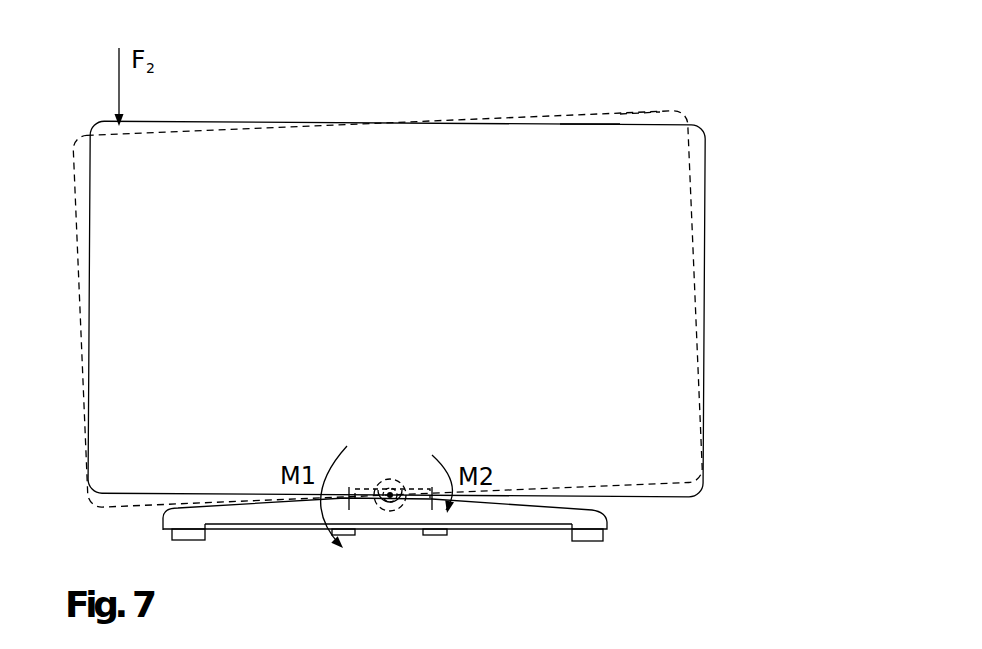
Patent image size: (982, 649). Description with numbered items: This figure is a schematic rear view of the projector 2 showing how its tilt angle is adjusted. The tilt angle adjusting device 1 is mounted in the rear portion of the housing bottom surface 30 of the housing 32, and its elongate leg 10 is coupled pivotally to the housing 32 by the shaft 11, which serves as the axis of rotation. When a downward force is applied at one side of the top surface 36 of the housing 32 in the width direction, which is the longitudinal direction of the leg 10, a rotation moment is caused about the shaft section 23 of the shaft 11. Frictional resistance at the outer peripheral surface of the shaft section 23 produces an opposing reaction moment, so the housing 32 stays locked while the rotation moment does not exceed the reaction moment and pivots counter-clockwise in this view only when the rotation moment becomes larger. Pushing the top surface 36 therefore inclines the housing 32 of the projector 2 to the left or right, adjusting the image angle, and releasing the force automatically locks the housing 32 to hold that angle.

The tilt angle adjusting device 1 is at (530, 563).
The projector 2 is at (443, 105).
The leg 10 is at (612, 527).
The shaft 11 is at (390, 498).
The shaft section 23 is at (390, 495).
The housing bottom surface 30 is at (688, 499).
The housing 32 is at (591, 135).
The top surface 36 is at (638, 128).